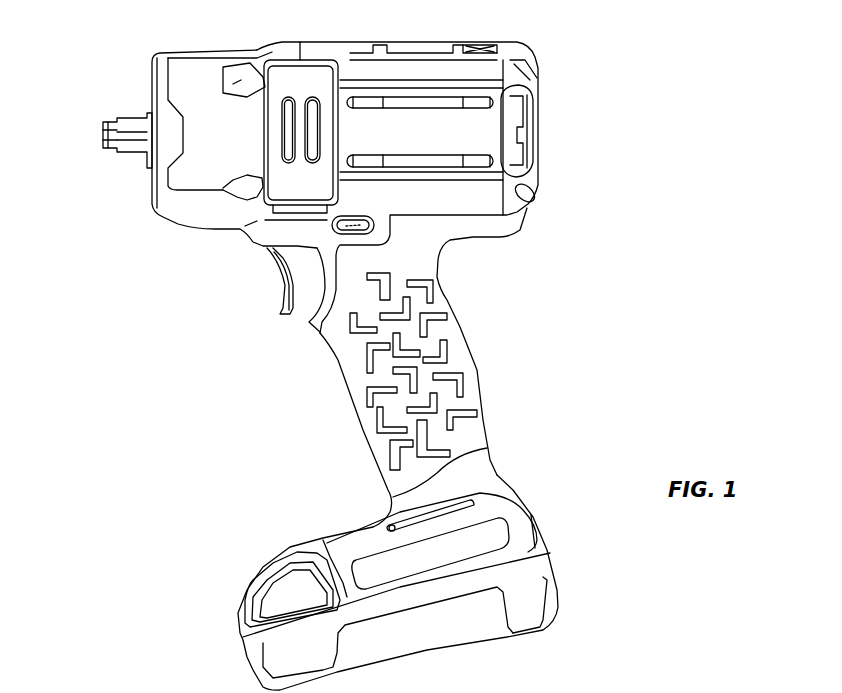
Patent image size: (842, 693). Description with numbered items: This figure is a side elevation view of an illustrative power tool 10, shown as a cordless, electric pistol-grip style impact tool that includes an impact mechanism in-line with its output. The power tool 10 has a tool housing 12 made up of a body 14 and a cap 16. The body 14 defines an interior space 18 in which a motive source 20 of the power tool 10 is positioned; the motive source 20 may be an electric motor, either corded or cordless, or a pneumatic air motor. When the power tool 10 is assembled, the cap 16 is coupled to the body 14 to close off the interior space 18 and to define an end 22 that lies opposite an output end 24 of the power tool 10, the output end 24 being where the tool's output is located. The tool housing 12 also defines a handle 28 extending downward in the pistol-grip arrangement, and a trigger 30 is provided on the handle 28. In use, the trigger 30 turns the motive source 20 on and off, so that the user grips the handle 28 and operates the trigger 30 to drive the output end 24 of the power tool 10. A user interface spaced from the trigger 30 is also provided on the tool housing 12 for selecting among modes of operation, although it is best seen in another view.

The power tool 10 is at (595, 35).
The tool housing 12 is at (491, 45).
The body 14 is at (349, 65).
The cap 16 is at (542, 105).
The interior space 18 is at (400, 73).
The motive source 20 is at (532, 176).
The end 22 is at (542, 158).
The output end 24 is at (97, 132).
The handle 28 is at (420, 343).
The trigger 30 is at (277, 300).